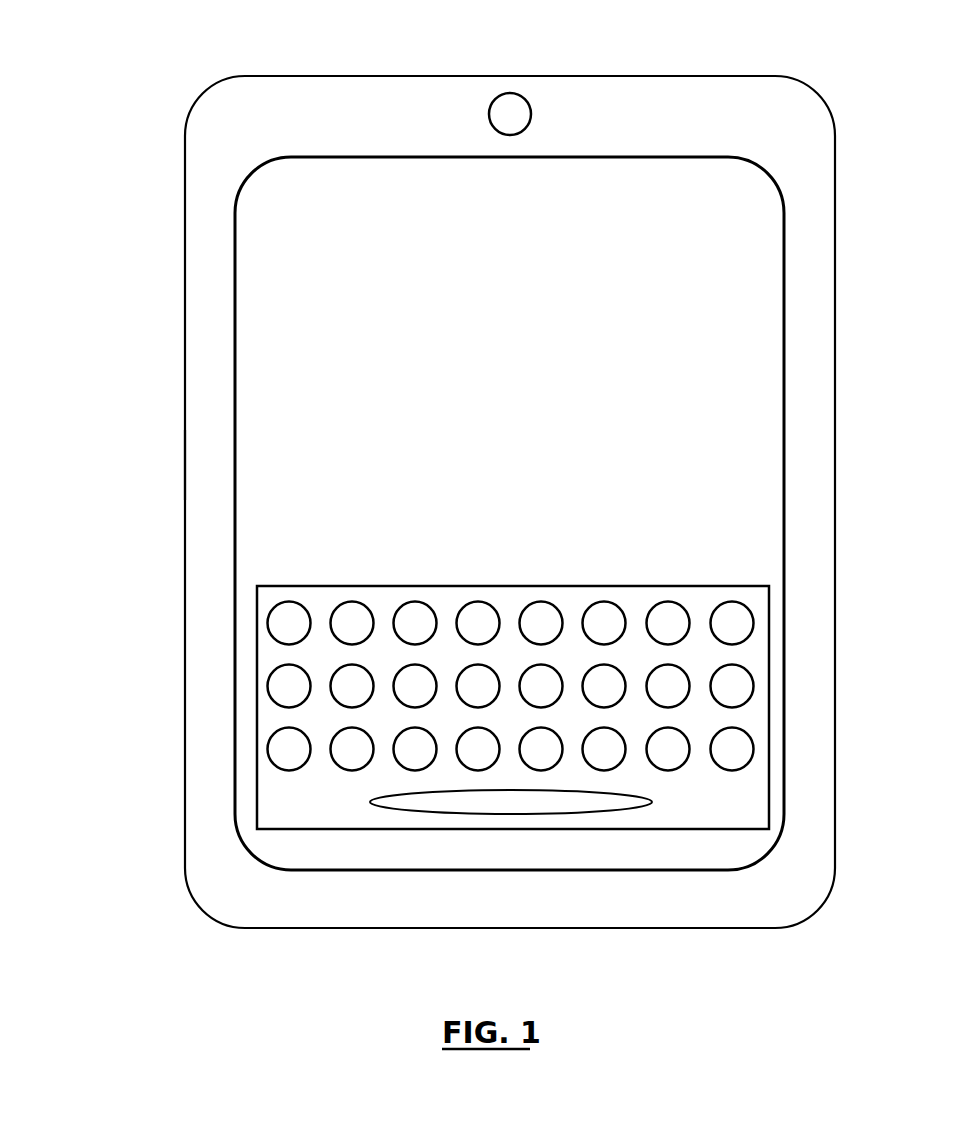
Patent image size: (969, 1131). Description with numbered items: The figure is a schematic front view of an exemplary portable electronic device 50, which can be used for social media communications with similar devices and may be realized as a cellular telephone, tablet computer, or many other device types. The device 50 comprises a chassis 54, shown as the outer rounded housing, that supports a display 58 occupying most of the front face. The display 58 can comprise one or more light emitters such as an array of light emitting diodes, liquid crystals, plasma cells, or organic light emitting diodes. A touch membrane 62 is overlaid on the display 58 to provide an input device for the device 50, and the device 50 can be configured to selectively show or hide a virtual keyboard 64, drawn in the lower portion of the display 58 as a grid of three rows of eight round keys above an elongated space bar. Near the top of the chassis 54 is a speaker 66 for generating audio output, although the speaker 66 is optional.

The portable electronic device 50 is at (158, 918).
The chassis 54 is at (182, 435).
The display 58 is at (263, 328).
The touch membrane 62 is at (263, 299).
The virtual keyboard 64 is at (258, 700).
The speaker 66 is at (478, 109).